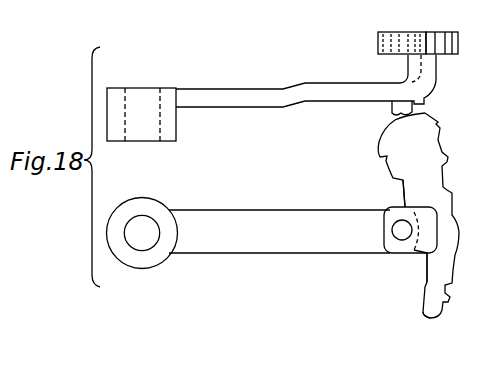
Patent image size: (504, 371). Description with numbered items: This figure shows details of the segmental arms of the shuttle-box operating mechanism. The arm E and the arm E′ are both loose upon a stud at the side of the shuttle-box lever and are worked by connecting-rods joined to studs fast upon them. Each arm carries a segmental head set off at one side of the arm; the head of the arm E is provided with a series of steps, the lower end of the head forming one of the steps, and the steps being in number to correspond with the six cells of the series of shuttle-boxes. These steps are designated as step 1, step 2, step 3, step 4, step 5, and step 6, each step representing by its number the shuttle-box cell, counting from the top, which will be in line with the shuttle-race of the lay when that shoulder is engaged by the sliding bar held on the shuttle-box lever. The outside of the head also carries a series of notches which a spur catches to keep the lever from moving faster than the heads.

The arm E is at (312, 239).
The arm E′ is at (266, 104).
The step 1 is at (388, 158).
The step 2 is at (402, 197).
The step 3 is at (417, 212).
The step 4 is at (421, 249).
The step 5 is at (427, 277).
The step 6 is at (430, 318).